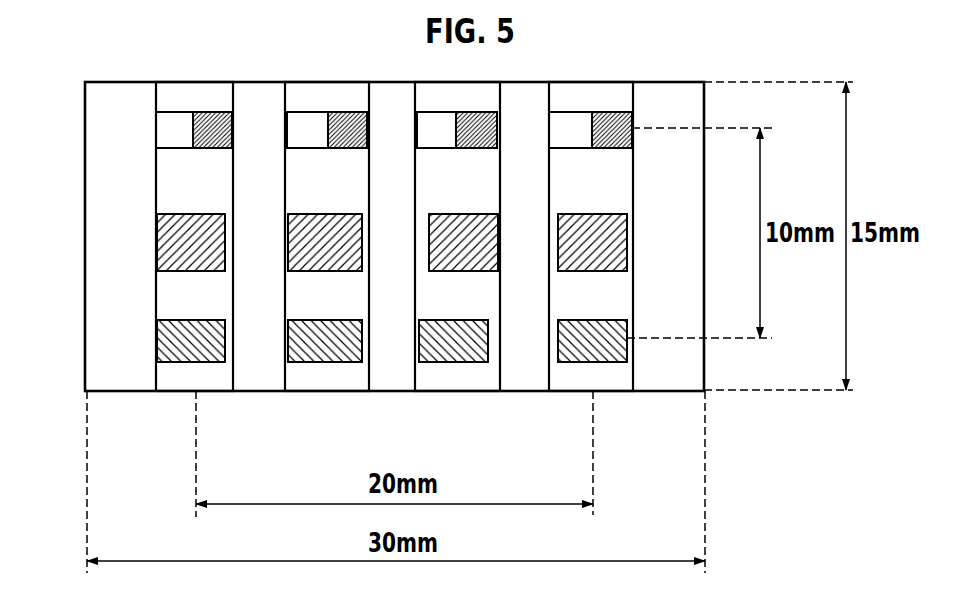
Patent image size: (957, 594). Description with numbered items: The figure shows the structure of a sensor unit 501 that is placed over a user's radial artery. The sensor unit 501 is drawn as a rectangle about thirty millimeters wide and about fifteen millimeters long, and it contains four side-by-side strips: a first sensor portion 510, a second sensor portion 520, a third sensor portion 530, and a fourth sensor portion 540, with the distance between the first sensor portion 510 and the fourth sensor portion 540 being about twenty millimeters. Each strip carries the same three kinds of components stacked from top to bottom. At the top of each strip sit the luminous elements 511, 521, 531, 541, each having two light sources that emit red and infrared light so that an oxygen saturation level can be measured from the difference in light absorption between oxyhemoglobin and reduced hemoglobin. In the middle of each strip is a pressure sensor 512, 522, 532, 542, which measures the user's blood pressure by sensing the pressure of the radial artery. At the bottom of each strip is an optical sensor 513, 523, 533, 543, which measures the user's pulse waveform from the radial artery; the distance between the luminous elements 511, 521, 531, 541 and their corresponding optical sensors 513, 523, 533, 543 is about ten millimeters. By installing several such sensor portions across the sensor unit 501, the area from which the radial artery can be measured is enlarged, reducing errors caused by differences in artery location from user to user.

The sensor unit 501 is at (85, 238).
The first sensor portion 510 is at (182, 393).
The second sensor portion 520 is at (328, 393).
The third sensor portion 530 is at (457, 393).
The fourth sensor portion 540 is at (617, 393).
The luminous element 511 is at (232, 133).
The pressure sensor 512 is at (225, 243).
The optical sensor 513 is at (225, 343).
The luminous element 521 is at (367, 133).
The pressure sensor 522 is at (362, 243).
The optical sensor 523 is at (362, 343).
The luminous element 531 is at (497, 133).
The pressure sensor 532 is at (498, 243).
The optical sensor 533 is at (488, 343).
The luminous element 541 is at (633, 140).
The pressure sensor 542 is at (627, 243).
The optical sensor 543 is at (627, 343).